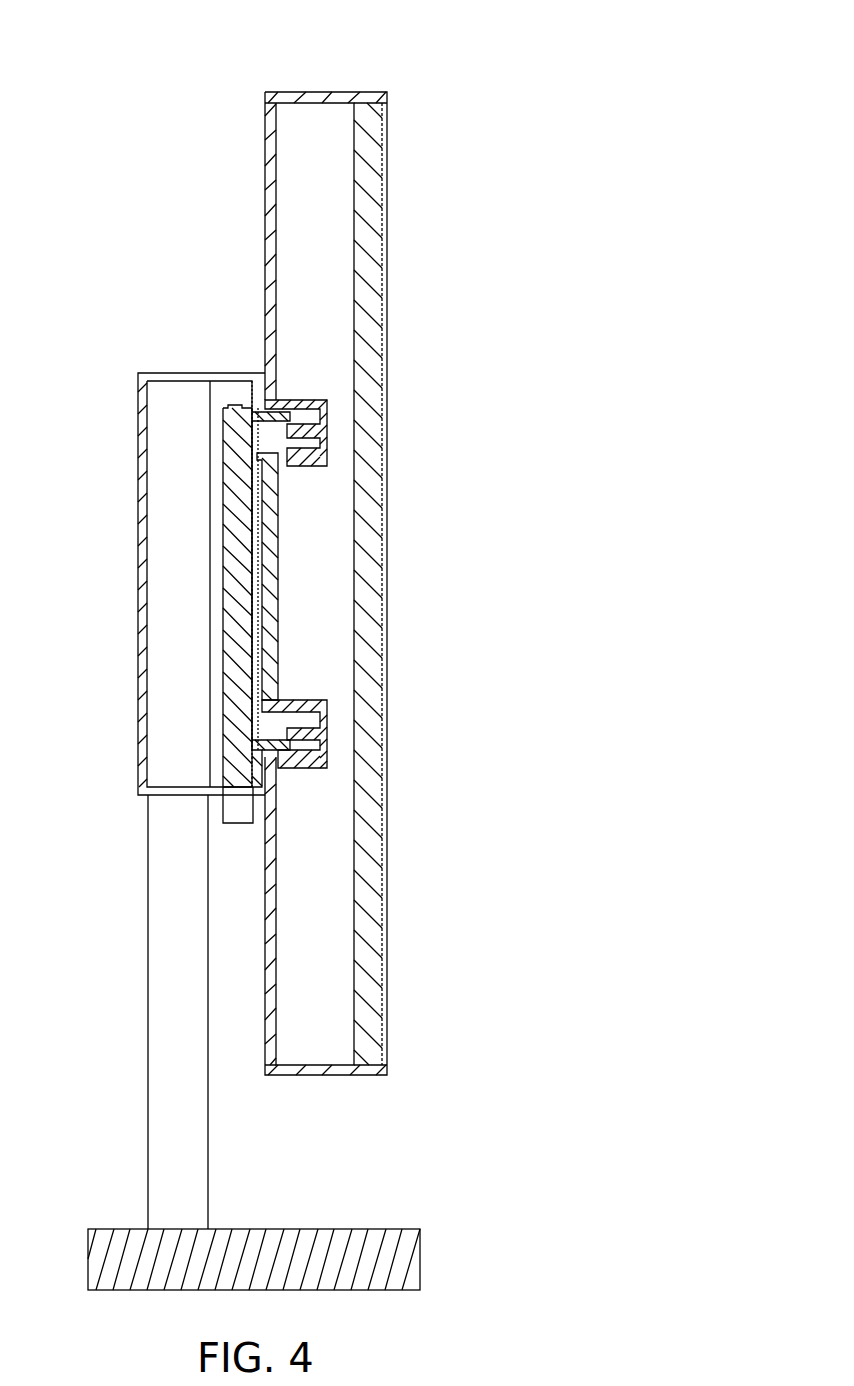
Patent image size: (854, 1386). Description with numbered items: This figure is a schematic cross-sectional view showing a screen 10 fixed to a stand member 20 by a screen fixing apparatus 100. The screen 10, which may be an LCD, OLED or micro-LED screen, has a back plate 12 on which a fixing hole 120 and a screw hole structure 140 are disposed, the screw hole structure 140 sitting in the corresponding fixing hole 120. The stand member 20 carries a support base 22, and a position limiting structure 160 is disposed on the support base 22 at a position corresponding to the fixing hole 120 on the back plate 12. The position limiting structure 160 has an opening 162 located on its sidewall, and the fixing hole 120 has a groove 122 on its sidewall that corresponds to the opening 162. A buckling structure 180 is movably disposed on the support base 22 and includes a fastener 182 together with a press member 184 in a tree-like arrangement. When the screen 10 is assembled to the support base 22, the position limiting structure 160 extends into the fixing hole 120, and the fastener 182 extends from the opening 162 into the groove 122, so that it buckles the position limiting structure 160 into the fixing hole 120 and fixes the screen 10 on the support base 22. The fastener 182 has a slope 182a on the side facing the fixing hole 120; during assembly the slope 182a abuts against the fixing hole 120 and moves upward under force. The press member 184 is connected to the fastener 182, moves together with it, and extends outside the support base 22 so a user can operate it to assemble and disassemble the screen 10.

The screen 10 is at (334, 537).
The back plate 12 is at (265, 125).
The screen fixing apparatus 100 is at (274, 499).
The stand member 20 is at (240, 784).
The support base 22 is at (139, 540).
The fixing hole 120 is at (250, 422).
The groove 122 is at (283, 476).
The screw hole structure 140 is at (300, 418).
The position limiting structure 160 is at (341, 526).
The opening 162 is at (300, 725).
The buckling structure 180 is at (274, 554).
The fastener 182 is at (256, 440).
The slope 182a is at (285, 752).
The press member 184 is at (240, 603).